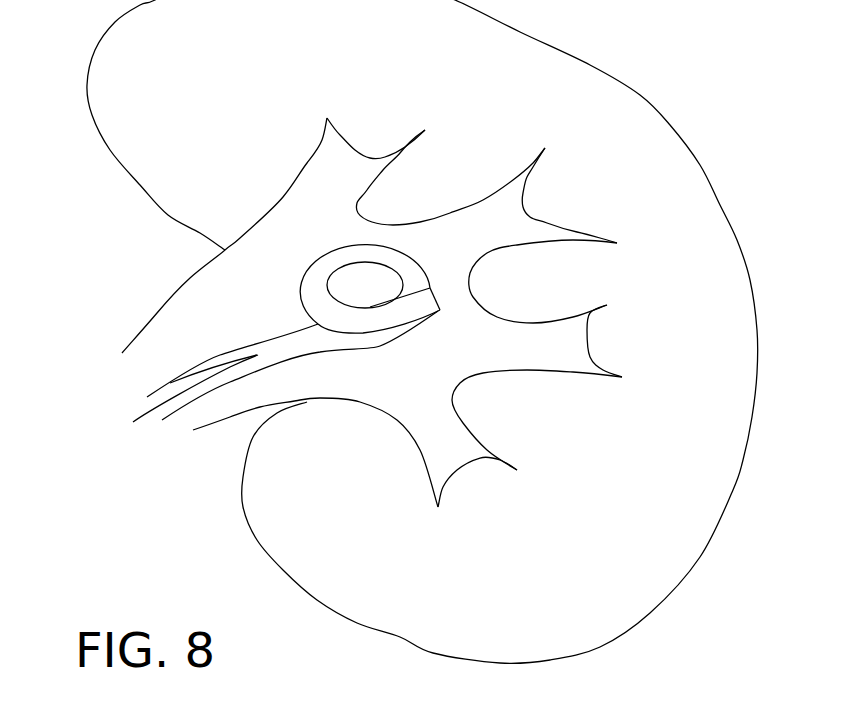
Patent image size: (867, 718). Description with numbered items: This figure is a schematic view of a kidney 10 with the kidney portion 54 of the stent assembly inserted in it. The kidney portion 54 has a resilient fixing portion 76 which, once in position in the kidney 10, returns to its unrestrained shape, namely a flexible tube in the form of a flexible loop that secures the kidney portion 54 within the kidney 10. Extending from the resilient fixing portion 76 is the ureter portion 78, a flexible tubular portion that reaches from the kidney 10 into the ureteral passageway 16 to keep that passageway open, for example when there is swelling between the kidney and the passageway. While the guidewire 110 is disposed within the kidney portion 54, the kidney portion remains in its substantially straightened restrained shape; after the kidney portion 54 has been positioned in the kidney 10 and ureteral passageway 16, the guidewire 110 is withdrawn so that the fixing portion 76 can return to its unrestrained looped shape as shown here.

The kidney 10 is at (670, 125).
The ureteral passageway 16 is at (230, 418).
The kidney portion 54 is at (333, 365).
The resilient fixing portion 76 is at (327, 252).
The ureter portion 78 is at (215, 355).
The guidewire 110 is at (180, 390).